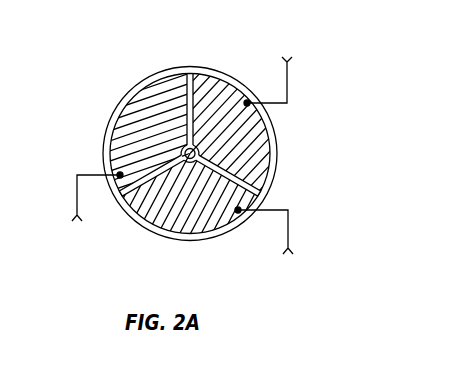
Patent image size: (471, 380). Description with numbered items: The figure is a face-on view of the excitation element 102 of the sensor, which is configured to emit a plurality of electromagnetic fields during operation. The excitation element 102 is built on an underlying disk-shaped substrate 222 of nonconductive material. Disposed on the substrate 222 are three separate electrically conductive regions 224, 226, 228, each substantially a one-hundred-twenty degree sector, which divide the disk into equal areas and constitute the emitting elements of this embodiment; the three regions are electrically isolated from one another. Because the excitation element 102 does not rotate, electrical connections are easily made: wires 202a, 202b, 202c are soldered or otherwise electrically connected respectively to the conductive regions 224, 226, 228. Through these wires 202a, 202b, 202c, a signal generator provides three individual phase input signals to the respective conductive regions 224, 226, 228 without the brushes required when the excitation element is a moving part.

The excitation element 102 is at (190, 66).
The substrate 222 is at (108, 155).
The electrically conductive region 224 is at (270, 158).
The electrically conductive region 226 is at (128, 101).
The electrically conductive region 228 is at (190, 234).
The wire 202a is at (288, 85).
The wire 202b is at (76, 200).
The wire 202c is at (289, 230).